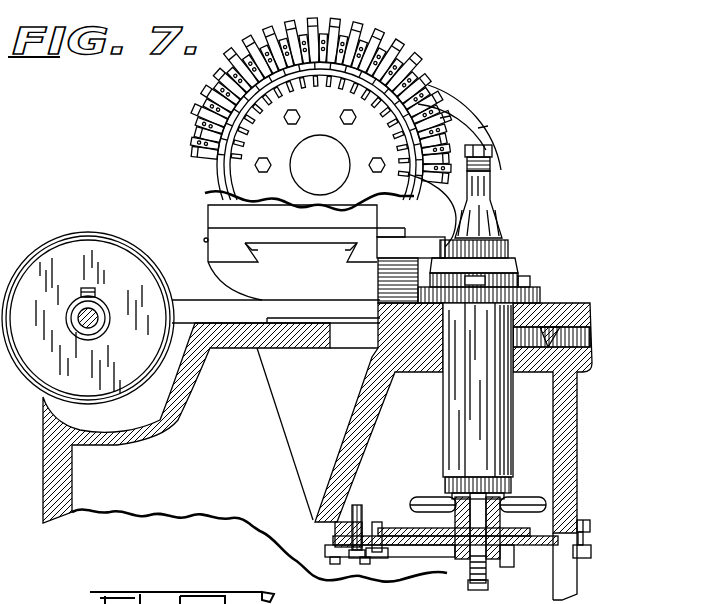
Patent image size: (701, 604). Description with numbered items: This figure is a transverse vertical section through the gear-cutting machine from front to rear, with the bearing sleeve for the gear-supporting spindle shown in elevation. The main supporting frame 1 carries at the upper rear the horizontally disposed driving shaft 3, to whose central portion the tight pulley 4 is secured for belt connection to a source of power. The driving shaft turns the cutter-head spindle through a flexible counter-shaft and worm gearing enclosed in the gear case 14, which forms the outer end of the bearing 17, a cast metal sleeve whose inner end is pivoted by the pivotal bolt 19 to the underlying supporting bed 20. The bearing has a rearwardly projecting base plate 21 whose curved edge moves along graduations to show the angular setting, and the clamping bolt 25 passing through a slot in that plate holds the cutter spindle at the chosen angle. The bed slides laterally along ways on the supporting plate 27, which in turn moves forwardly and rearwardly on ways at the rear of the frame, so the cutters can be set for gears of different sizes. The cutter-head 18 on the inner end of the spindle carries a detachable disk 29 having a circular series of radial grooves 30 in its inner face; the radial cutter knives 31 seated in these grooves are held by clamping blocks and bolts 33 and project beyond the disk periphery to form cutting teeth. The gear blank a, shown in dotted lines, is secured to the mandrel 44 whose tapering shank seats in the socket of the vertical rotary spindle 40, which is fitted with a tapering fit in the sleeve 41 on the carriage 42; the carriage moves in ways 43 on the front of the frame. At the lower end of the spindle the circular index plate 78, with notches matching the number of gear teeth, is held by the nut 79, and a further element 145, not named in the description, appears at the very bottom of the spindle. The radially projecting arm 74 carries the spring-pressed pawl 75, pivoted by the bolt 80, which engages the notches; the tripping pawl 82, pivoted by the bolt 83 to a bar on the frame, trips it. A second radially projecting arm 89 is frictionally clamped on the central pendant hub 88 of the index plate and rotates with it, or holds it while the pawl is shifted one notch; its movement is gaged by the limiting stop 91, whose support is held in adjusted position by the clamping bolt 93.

The main supporting frame 1 is at (45, 470).
The driving shaft 3 is at (82, 328).
The tight pulley 4 is at (60, 243).
The gear case 14 is at (478, 118).
The bearing 17 is at (427, 209).
The cutter-head 18 is at (212, 120).
The pivotal bolt 19 is at (388, 205).
The supporting bed 20 is at (212, 240).
The base plate 21 is at (212, 212).
The clamping bolt 25 is at (207, 192).
The supporting plate 27 is at (276, 283).
The detachable disk 29 is at (334, 130).
The radial groove 30 is at (356, 33).
The cutter knife 31 is at (244, 52).
The bolt 33 is at (262, 112).
The rotary spindle 40 is at (508, 496).
The sleeve 41 is at (456, 427).
The carriage 42 is at (560, 303).
The ways 43 is at (594, 333).
The mandrel 44 is at (502, 216).
The radially projecting arm 74 is at (410, 527).
The pawl 75 is at (403, 558).
The index plate 78 is at (534, 548).
The nut 79 is at (492, 569).
The bolt 80 is at (377, 558).
The tripping pawl 82 is at (356, 558).
The bolt 83 is at (335, 538).
The central pendant hub 88 is at (458, 555).
The radially projecting arm 89 is at (513, 555).
The limiting stop 91 is at (592, 550).
The clamping bolt 93 is at (586, 522).
The lock nut 145 is at (480, 588).
The gear blank a is at (496, 164).